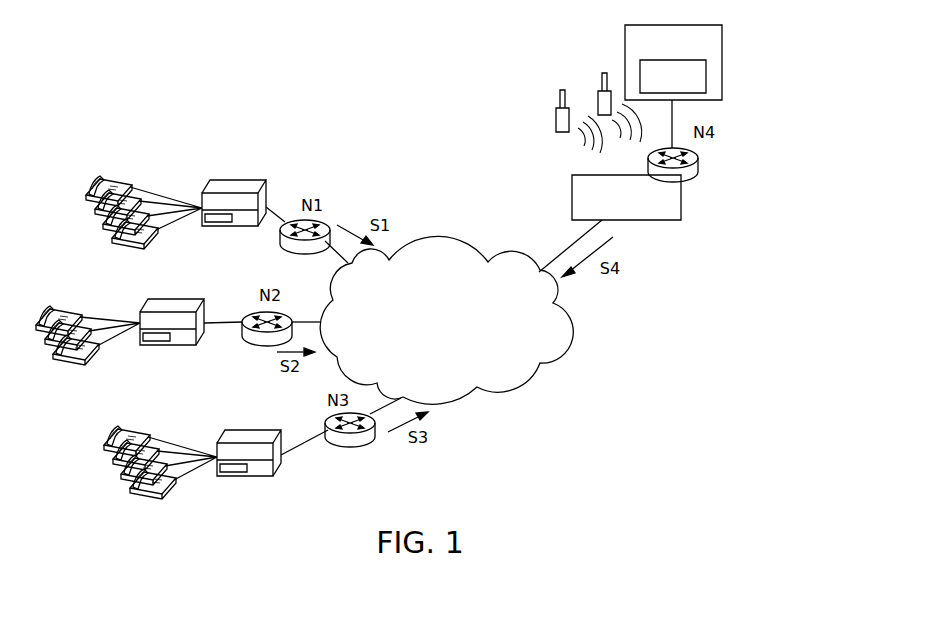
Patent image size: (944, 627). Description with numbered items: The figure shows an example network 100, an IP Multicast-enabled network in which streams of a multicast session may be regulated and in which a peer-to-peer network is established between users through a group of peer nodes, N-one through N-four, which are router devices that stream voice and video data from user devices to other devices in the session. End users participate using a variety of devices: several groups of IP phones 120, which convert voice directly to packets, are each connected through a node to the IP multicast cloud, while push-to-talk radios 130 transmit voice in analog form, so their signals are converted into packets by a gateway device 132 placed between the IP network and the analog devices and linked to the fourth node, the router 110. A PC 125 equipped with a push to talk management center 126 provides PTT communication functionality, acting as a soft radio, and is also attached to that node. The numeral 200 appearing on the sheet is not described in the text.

The network 100 is at (215, 53).
The router 110 is at (698, 165).
The IP phones 120 is at (127, 181).
The PC 125 is at (722, 37).
The push to talk management center 126 is at (706, 68).
The push-to-talk radios 130 is at (555, 107).
The gateway device 132 is at (681, 203).
The system 200 is at (598, 618).